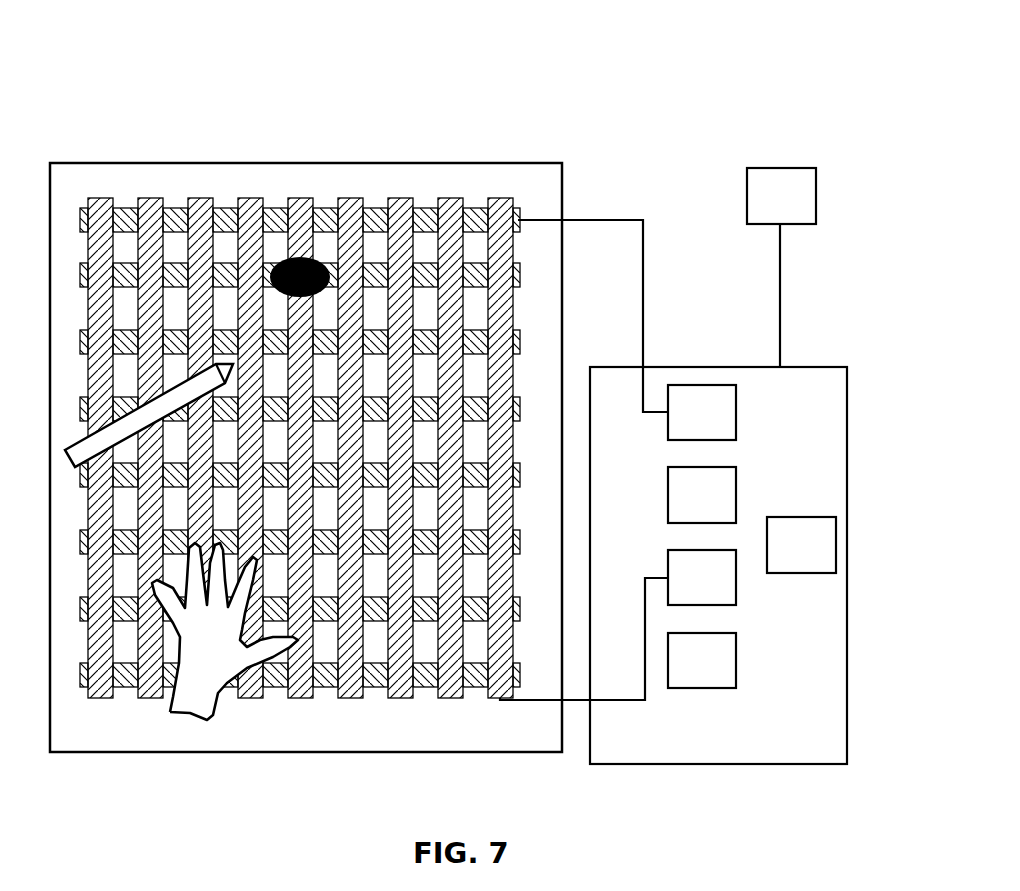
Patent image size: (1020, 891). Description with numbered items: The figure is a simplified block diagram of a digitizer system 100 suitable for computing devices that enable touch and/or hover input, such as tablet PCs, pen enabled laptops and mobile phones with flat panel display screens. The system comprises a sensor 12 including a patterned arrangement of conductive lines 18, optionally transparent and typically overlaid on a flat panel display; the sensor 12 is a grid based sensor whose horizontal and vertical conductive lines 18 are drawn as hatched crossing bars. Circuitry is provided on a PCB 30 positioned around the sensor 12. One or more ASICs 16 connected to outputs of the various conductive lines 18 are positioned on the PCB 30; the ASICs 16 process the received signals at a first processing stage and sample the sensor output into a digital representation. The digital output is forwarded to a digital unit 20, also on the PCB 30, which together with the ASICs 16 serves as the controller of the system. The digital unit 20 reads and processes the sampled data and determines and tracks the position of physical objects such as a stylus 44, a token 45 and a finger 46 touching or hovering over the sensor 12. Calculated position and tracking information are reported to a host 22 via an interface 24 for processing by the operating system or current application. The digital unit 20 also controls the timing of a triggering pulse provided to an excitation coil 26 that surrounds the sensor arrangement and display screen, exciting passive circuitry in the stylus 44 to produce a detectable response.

The digitizer system 100 is at (668, 74).
The sensor 12 is at (473, 170).
The electrodes 18 is at (98, 197).
The token 45 is at (310, 266).
The stylus 44 is at (75, 440).
The finger 46 is at (215, 686).
The excitation coil 26 is at (562, 186).
The host 22 is at (816, 178).
The interface 24 is at (780, 268).
The PCB 30 is at (812, 367).
The ASIC 16 is at (736, 392).
The digital unit 20 is at (803, 517).